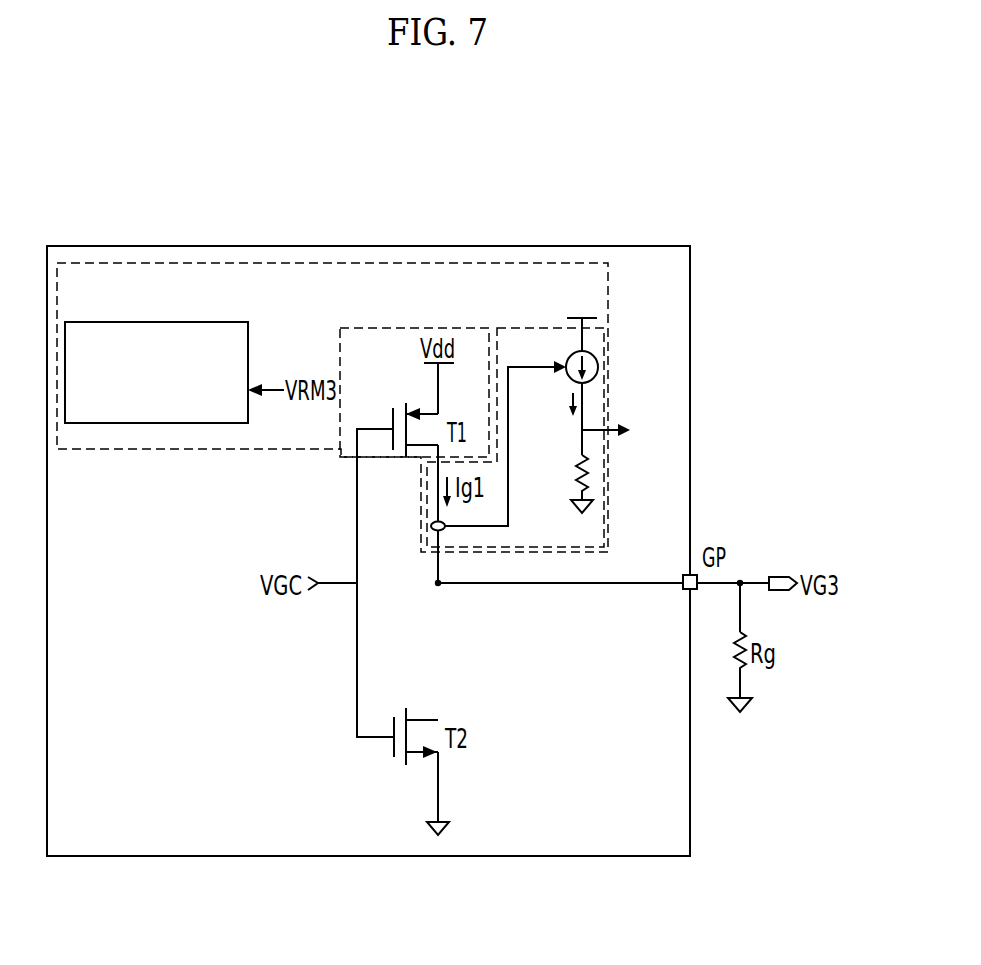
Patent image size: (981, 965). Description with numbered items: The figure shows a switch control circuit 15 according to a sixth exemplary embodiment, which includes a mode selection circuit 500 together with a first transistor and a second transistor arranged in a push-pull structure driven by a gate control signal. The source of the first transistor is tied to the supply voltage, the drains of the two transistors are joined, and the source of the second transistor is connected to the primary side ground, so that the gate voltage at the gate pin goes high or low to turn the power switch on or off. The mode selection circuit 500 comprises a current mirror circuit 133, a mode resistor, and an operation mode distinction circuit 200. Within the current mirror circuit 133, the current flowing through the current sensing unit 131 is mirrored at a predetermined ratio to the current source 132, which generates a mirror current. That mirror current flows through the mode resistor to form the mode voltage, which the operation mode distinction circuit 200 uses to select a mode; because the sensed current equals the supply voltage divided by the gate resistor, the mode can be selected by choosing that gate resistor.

The switch control circuit 15 is at (535, 246).
The operation mode distinction circuit 200 is at (220, 322).
The mode selection circuit 500 is at (237, 450).
The current mirror circuit 133 is at (527, 328).
The current source 132 is at (597, 354).
The current sensing unit 131 is at (434, 533).